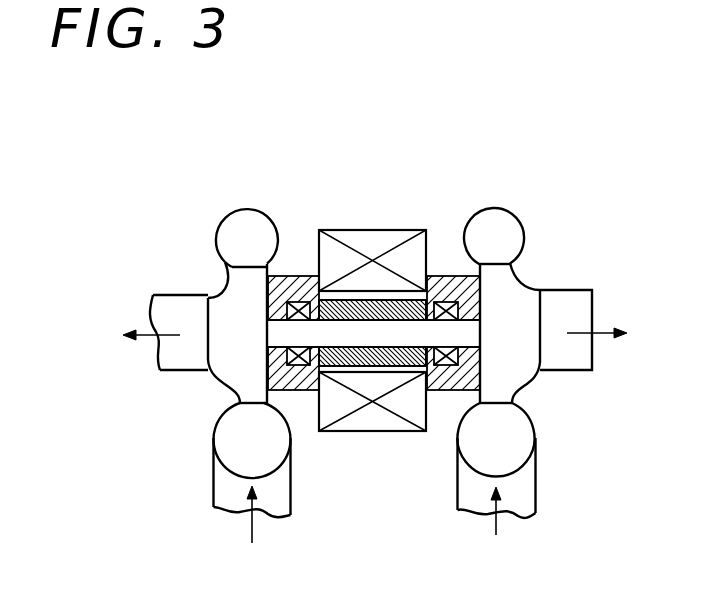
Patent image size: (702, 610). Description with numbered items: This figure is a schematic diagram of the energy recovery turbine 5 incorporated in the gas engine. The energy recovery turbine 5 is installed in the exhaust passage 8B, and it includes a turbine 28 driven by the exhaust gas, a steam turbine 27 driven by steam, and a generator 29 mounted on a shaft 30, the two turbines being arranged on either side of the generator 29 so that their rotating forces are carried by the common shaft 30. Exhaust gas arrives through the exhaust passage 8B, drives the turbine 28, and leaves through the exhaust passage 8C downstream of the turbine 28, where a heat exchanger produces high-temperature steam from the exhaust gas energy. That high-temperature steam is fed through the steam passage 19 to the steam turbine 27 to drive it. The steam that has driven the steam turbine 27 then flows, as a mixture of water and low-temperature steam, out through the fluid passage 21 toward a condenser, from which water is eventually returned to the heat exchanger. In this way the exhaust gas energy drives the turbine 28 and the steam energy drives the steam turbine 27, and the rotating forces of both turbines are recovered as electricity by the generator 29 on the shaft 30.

The energy recovery turbine 5 is at (405, 229).
The generator 29 is at (370, 413).
The shaft 30 is at (309, 333).
The steam turbine 27 is at (238, 228).
The turbine 28 is at (505, 232).
The fluid passage 21 is at (178, 312).
The exhaust passage 8C is at (567, 310).
The steam passage 19 is at (233, 487).
The exhaust passage 8B is at (521, 493).